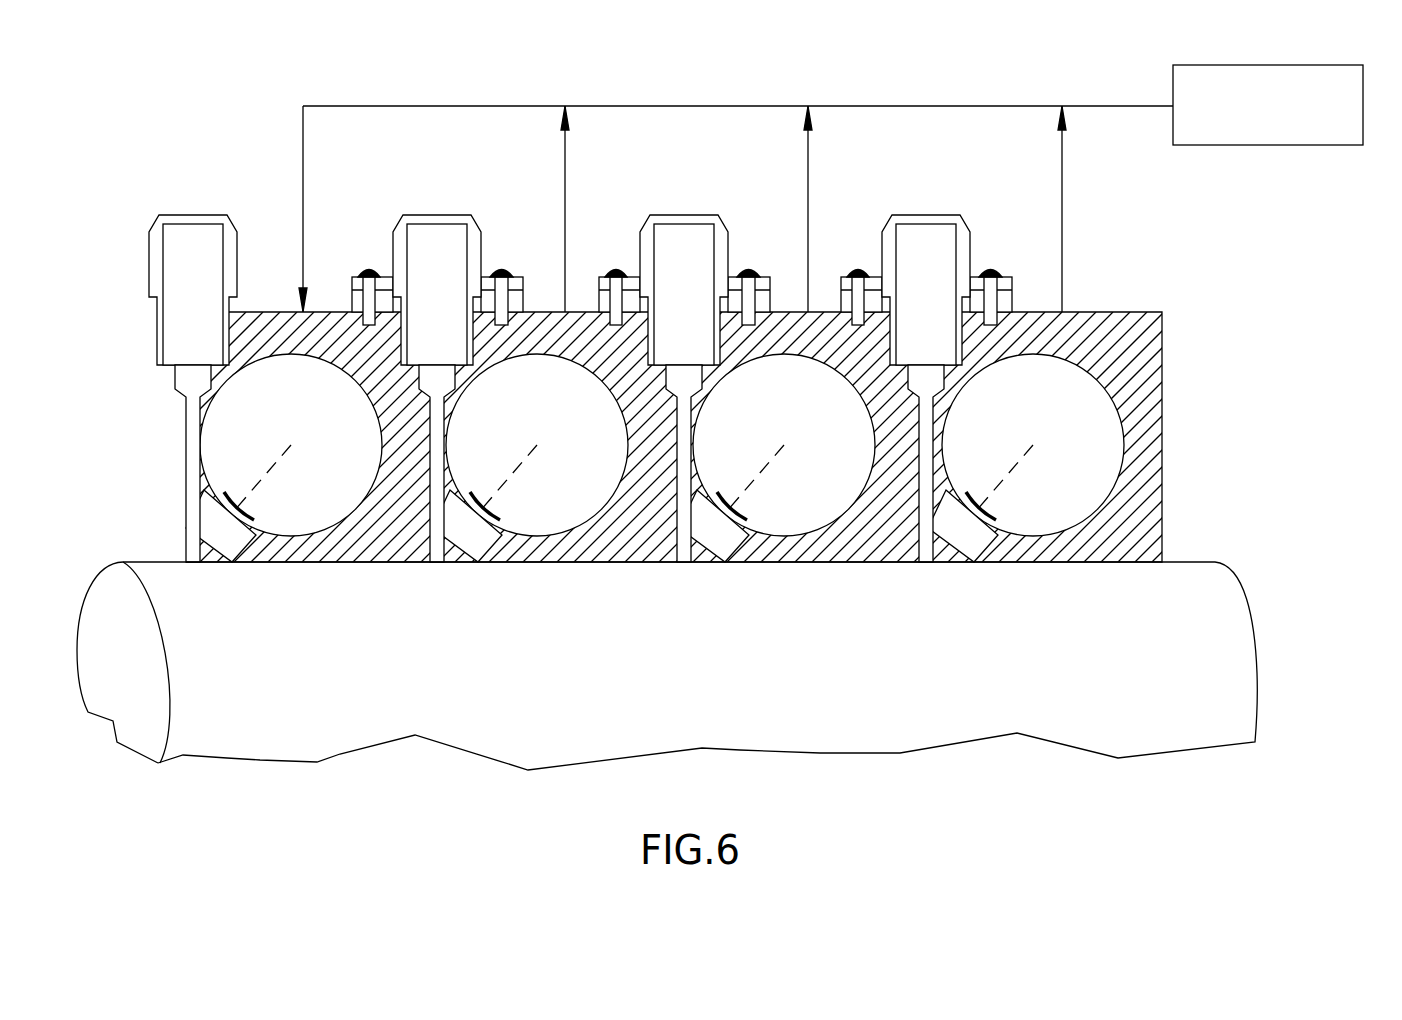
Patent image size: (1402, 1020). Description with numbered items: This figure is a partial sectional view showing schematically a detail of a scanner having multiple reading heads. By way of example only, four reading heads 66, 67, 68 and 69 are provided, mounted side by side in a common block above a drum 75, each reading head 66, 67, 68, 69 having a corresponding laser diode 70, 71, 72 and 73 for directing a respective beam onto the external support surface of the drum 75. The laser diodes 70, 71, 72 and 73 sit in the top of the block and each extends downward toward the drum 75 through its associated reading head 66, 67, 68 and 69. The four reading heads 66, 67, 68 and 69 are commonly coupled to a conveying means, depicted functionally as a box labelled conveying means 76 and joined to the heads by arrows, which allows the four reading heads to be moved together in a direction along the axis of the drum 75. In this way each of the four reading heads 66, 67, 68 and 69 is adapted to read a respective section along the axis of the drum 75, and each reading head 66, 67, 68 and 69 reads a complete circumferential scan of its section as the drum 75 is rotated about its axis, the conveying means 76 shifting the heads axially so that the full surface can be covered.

The reading head 66 is at (258, 312).
The reading head 67 is at (543, 312).
The reading head 68 is at (794, 312).
The reading head 69 is at (1042, 312).
The laser diode 70 is at (192, 215).
The laser diode 71 is at (443, 215).
The laser diode 72 is at (678, 215).
The laser diode 73 is at (923, 215).
The drum 75 is at (1236, 688).
The conveying means 76 is at (1249, 145).